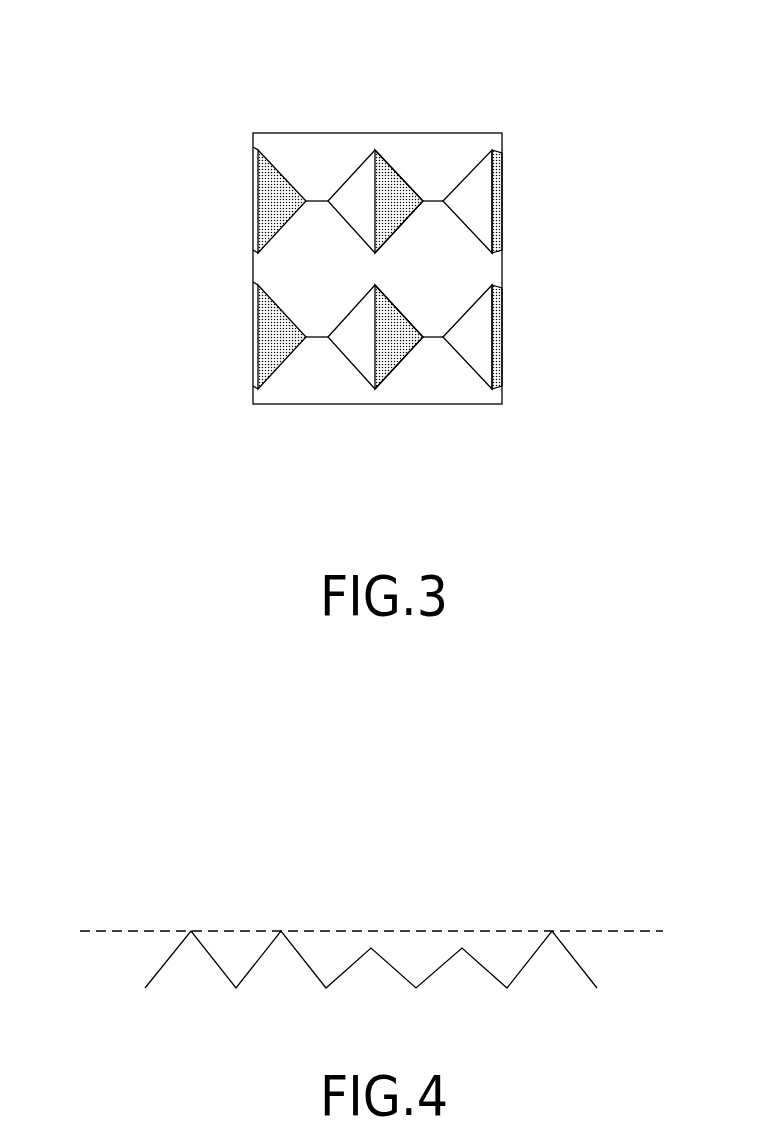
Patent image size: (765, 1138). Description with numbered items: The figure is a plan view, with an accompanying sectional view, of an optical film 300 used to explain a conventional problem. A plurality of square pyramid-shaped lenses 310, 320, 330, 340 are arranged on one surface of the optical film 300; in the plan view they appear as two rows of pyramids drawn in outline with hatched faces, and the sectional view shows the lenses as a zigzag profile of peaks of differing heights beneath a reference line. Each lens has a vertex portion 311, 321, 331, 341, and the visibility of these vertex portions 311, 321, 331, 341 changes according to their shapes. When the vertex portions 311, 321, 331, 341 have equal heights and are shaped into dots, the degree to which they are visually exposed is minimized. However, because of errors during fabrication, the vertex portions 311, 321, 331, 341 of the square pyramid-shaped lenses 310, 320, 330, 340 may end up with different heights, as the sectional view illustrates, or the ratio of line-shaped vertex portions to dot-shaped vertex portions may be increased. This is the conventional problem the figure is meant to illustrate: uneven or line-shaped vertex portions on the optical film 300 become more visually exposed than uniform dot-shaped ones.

The optical film 300 is at (396, 47).
The square pyramid-shaped lens 310 is at (299, 158).
The vertex portion 311 is at (313, 205).
The square pyramid-shaped lens 320 is at (453, 158).
The vertex portion 321 is at (433, 203).
The square pyramid-shaped lens 330 is at (300, 380).
The vertex portion 331 is at (315, 336).
The square pyramid-shaped lens 340 is at (455, 378).
The vertex portion 341 is at (434, 336).